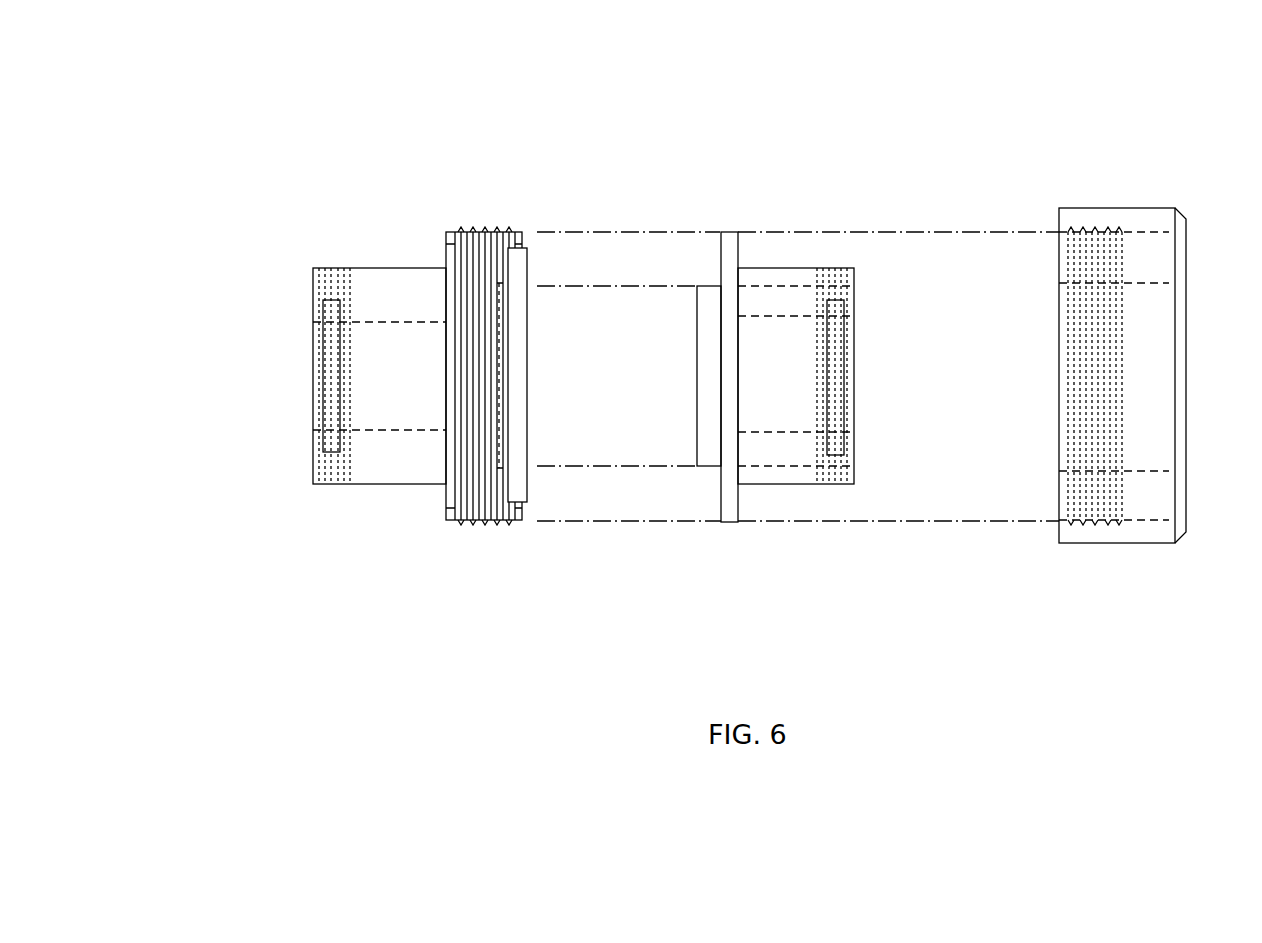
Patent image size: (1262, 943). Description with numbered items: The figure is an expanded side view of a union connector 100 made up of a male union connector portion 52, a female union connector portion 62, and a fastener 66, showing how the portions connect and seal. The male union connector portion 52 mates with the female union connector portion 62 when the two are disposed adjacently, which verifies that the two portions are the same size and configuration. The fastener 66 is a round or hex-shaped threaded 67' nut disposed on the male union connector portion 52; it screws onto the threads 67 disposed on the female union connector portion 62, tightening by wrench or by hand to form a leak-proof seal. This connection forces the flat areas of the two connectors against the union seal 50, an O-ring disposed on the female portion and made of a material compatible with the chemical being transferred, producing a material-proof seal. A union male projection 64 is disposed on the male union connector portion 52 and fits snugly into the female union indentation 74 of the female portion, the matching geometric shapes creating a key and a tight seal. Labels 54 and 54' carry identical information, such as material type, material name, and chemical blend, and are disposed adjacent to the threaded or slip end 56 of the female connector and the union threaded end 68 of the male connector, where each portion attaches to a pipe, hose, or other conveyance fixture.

The union connector 100 is at (323, 165).
The union seal 50 is at (527, 267).
The male union connector portion 52 is at (799, 245).
The label 54 is at (908, 377).
The label 54' is at (256, 376).
The union slip end 56 is at (313, 410).
The female union connector portion 62 is at (378, 513).
The union male projection 64 is at (707, 466).
The fastener 66 is at (1135, 543).
The threads 67 is at (484, 309).
The threaded nut threads 67' is at (1031, 309).
The union threaded end 68 is at (853, 447).
The female union indentation 74 is at (498, 312).